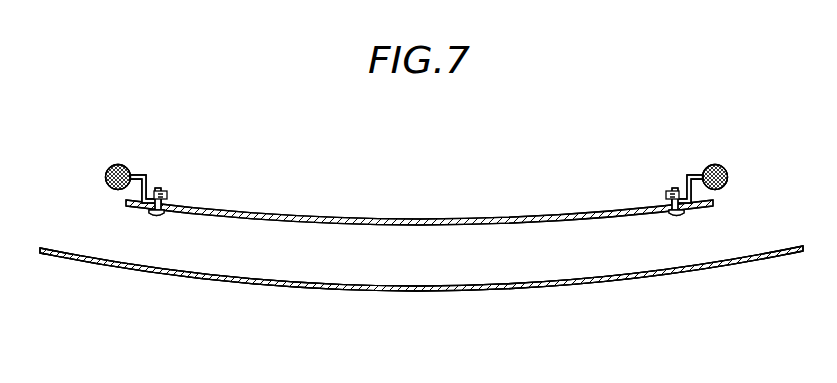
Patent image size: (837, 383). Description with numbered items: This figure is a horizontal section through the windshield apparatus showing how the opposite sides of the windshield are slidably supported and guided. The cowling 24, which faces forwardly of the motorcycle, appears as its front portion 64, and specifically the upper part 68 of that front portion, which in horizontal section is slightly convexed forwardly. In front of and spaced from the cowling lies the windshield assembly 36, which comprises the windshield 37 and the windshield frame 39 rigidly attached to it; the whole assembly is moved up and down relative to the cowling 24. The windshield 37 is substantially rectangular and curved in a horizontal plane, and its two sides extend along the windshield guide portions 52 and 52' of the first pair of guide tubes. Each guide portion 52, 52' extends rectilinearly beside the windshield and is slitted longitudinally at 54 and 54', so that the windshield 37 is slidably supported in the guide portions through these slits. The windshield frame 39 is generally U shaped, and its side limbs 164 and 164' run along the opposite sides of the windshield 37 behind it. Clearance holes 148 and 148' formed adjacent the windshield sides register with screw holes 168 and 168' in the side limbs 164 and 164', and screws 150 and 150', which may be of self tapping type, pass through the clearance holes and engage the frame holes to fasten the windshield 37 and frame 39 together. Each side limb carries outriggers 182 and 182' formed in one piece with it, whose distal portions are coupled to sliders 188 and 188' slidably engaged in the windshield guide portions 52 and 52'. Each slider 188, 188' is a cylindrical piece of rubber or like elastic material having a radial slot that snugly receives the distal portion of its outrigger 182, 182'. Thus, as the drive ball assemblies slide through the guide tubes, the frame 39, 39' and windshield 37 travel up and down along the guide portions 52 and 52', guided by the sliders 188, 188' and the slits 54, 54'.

The cowling 24 is at (734, 264).
The windshield assembly 36 is at (320, 210).
The windshield 37 is at (424, 217).
The windshield frame 39 is at (677, 156).
The windshield guide portion 52 is at (747, 163).
The slit 54 is at (692, 156).
The front portion 64 is at (474, 293).
The upper part 68 is at (342, 291).
The clearance hole 148 is at (650, 223).
The screw 150 is at (706, 225).
The side limb 164 is at (628, 192).
The screw hole 168 is at (637, 170).
The outrigger 182 is at (732, 194).
The slider 188 is at (735, 149).
The mounting assembly (alternate) 39' is at (172, 161).
The windshield guide portion 52' is at (84, 170).
The slit 54' is at (158, 154).
The clearance hole 148' is at (184, 225).
The screw 150' is at (123, 229).
The side limb 164' is at (206, 192).
The screw hole 168' is at (200, 173).
The bracket arm (alternate) 182' is at (104, 191).
The seal bead (alternate) 188' is at (110, 145).